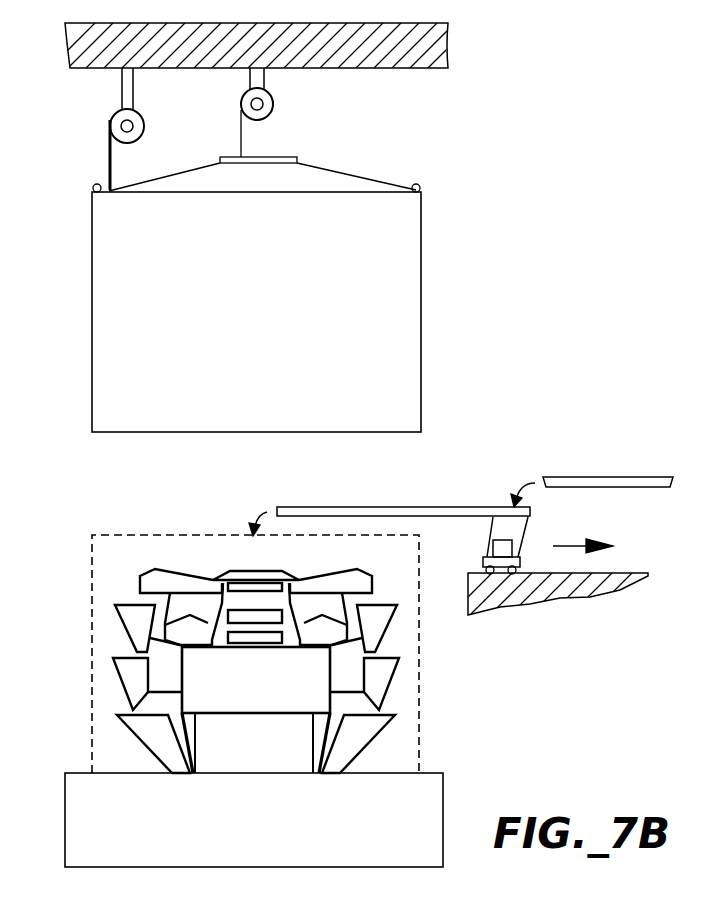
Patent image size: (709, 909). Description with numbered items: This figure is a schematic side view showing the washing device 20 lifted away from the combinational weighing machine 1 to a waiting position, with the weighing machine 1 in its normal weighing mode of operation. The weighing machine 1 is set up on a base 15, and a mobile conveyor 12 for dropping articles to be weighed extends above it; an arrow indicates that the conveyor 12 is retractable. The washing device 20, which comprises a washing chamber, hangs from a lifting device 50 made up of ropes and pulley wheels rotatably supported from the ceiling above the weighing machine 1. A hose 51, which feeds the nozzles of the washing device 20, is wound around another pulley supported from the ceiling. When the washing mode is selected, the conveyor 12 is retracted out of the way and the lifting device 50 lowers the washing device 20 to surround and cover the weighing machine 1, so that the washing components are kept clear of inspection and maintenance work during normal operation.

The combinational weighing machine 1 is at (263, 690).
The conveyor 12 is at (322, 507).
The base 15 is at (430, 773).
The washing device 20 is at (421, 277).
The lifting device 50 is at (297, 111).
The hose 51 is at (108, 158).